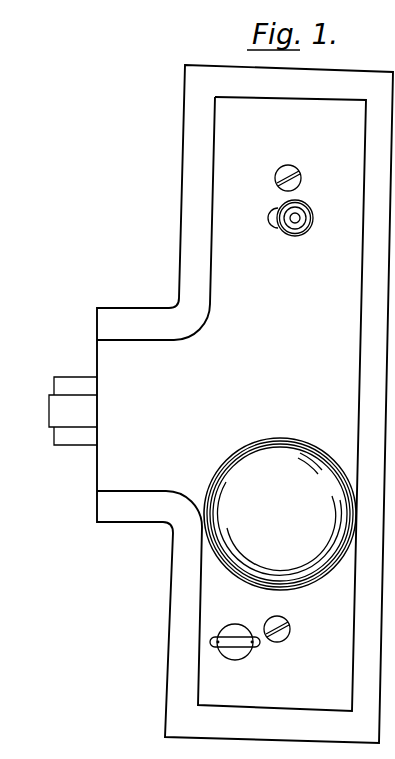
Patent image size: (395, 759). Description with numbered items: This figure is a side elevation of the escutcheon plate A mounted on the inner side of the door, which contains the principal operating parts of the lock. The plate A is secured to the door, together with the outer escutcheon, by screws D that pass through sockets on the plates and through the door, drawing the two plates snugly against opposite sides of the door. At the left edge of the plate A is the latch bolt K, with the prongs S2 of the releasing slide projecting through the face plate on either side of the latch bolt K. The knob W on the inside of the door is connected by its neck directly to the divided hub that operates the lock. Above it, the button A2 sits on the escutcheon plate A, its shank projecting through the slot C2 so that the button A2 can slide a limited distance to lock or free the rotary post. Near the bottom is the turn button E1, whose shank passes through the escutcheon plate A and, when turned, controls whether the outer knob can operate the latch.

The escutcheon plate A is at (245, 404).
The latch bolt K is at (62, 413).
The prongs S2 is at (70, 383).
The knob W is at (270, 452).
The screws D is at (296, 167).
The button A2 is at (305, 216).
The slot C2 is at (271, 226).
The turn button E1 is at (218, 637).